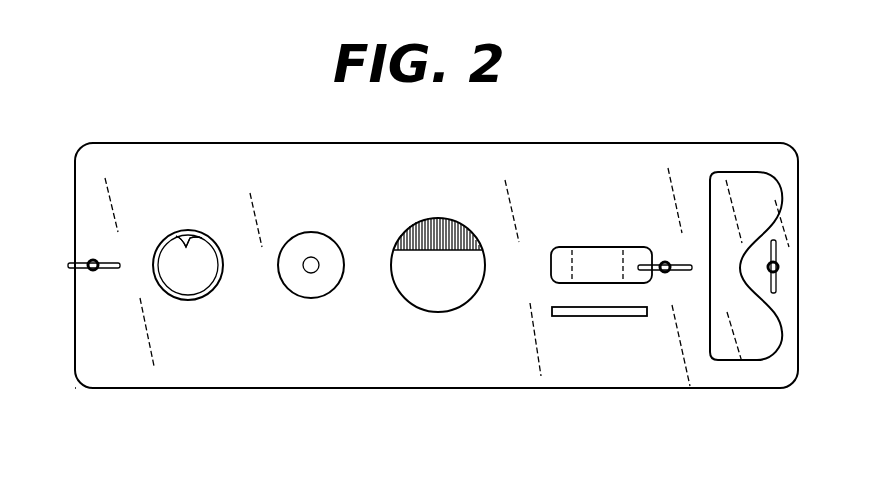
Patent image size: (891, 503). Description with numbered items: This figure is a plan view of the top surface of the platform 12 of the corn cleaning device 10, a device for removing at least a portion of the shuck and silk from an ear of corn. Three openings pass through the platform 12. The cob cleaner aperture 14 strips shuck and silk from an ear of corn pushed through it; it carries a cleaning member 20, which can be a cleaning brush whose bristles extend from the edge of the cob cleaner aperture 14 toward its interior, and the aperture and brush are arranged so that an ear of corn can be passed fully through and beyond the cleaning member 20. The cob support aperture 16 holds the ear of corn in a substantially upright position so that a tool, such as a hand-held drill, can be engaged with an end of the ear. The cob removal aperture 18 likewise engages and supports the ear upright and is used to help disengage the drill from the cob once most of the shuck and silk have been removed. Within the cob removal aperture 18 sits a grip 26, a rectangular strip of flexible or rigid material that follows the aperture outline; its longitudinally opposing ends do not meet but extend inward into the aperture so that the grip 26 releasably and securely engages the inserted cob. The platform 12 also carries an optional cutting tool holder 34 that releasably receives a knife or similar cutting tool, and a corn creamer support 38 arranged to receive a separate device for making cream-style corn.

The corn cleaning device 10 is at (262, 106).
The platform 12 is at (578, 143).
The cob cleaner aperture 14 is at (438, 312).
The cob support aperture 16 is at (311, 298).
The cob removal aperture 18 is at (188, 300).
The cleaning member 20 is at (437, 218).
The grip 26 is at (188, 230).
The cutting tool holder 34 is at (597, 316).
The corn creamer support 38 is at (753, 188).